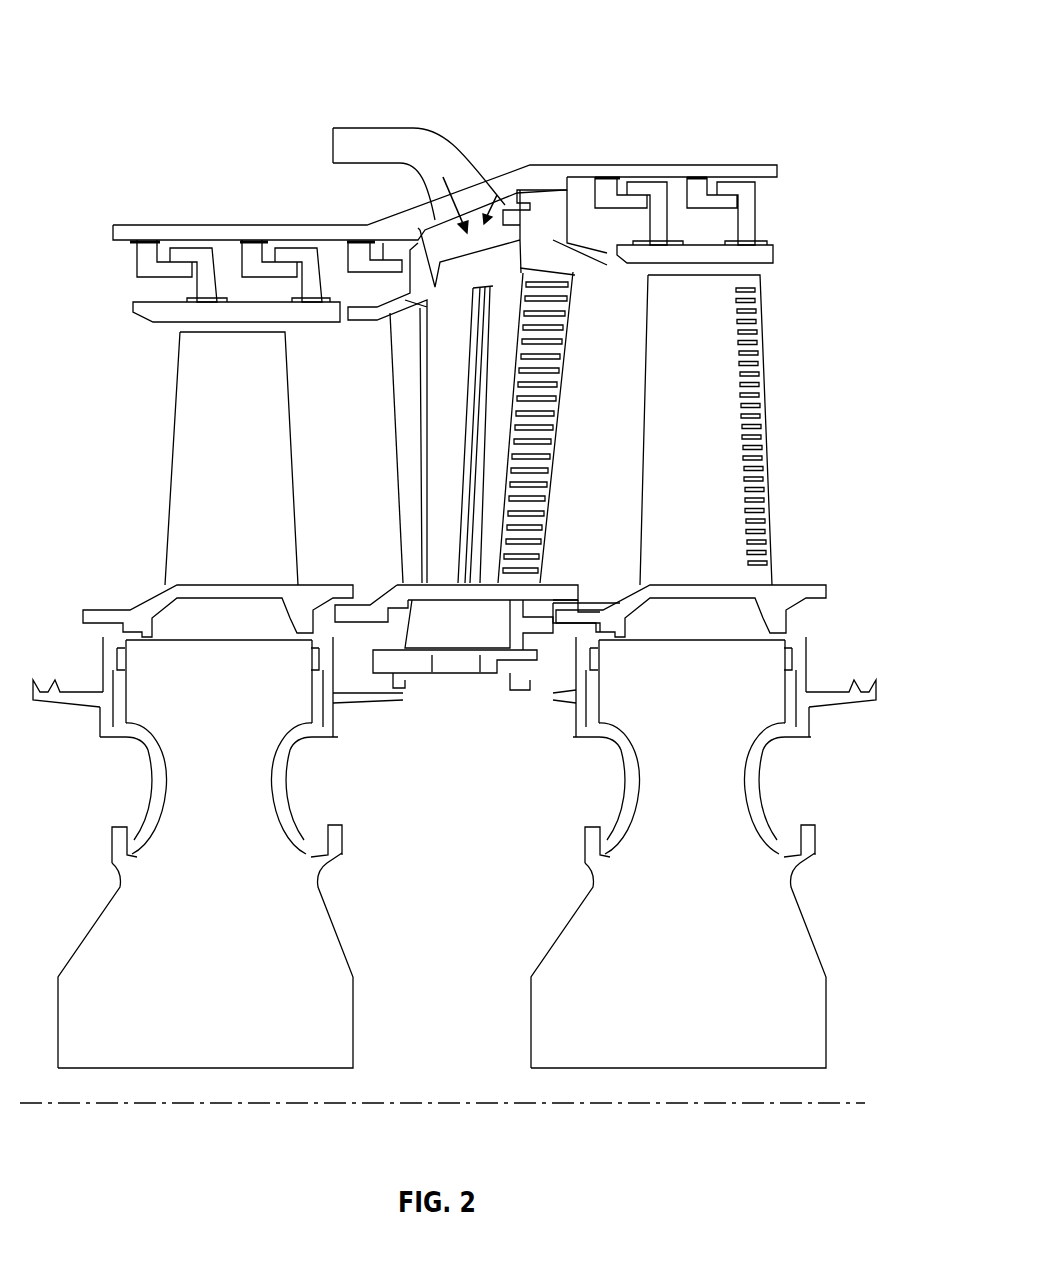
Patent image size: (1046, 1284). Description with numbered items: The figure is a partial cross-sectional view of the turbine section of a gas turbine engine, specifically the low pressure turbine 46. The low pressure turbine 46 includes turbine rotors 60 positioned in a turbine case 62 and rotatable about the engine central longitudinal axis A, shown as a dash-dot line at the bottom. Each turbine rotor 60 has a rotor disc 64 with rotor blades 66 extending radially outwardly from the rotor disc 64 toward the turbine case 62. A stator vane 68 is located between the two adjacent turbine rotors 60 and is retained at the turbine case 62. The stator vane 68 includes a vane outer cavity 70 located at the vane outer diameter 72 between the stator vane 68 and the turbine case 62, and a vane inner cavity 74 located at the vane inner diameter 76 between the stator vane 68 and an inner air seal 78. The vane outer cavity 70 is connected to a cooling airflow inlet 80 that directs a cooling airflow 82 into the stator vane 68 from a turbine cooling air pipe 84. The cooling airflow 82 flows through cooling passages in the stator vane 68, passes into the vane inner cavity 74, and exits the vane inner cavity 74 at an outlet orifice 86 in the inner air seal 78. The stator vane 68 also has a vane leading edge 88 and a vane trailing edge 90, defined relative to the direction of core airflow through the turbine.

The low pressure turbine 46 is at (158, 47).
The turbine rotor 60 is at (95, 1008).
The turbine case 62 is at (637, 178).
The rotor disc 64 is at (199, 842).
The rotor blade 66 is at (219, 450).
The stator vane 68 is at (400, 450).
The vane outer cavity 70 is at (491, 215).
The vane outer diameter 72 is at (502, 245).
The vane inner cavity 74 is at (481, 616).
The vane inner diameter 76 is at (415, 583).
The inner air seal 78 is at (490, 662).
The cooling airflow inlet 80 is at (480, 290).
The cooling airflow 82 is at (465, 226).
The turbine cooling air pipe 84 is at (363, 144).
The outlet orifice 86 is at (438, 662).
The vane leading edge 88 is at (394, 398).
The vane trailing edge 90 is at (552, 448).
The engine central longitudinal axis A is at (418, 1102).